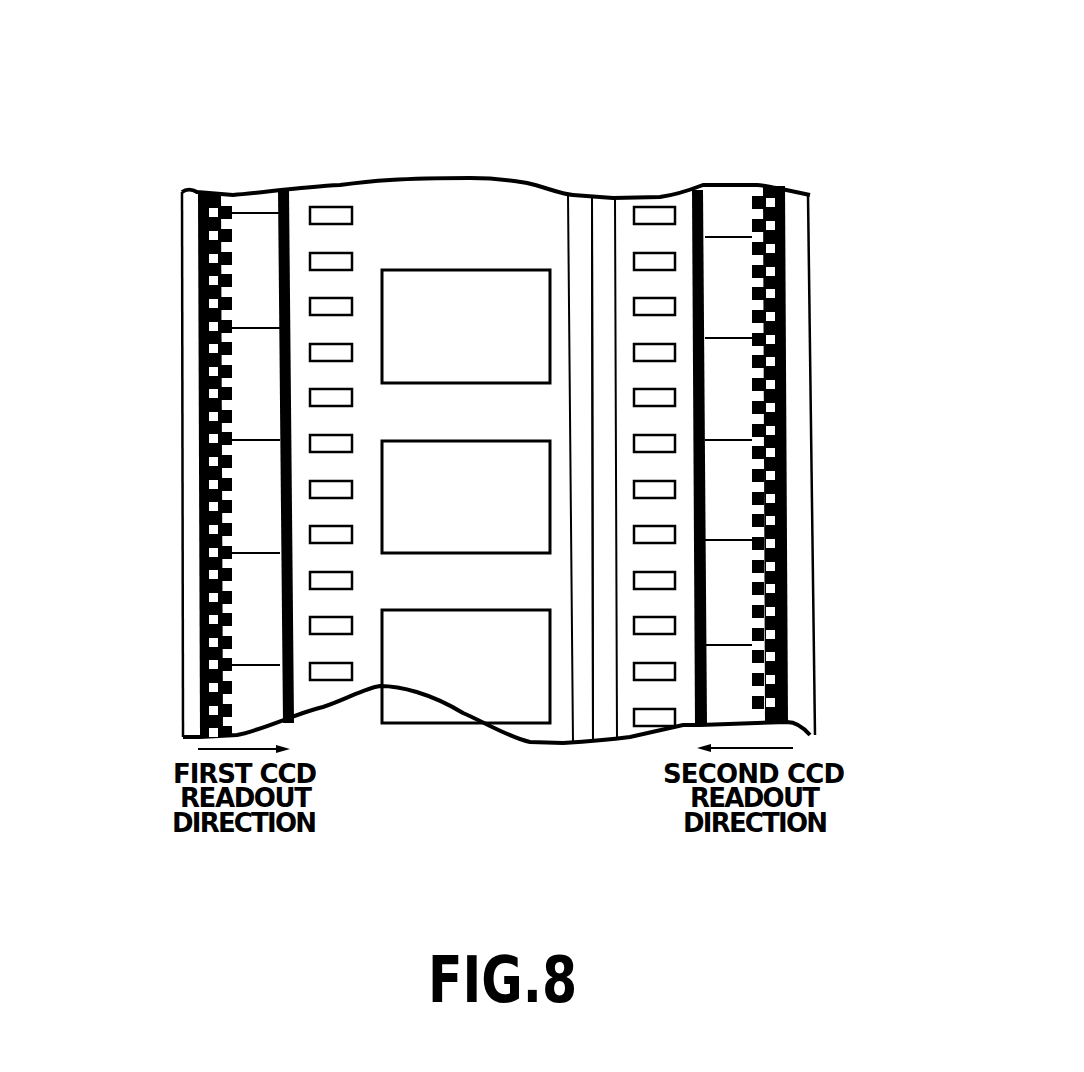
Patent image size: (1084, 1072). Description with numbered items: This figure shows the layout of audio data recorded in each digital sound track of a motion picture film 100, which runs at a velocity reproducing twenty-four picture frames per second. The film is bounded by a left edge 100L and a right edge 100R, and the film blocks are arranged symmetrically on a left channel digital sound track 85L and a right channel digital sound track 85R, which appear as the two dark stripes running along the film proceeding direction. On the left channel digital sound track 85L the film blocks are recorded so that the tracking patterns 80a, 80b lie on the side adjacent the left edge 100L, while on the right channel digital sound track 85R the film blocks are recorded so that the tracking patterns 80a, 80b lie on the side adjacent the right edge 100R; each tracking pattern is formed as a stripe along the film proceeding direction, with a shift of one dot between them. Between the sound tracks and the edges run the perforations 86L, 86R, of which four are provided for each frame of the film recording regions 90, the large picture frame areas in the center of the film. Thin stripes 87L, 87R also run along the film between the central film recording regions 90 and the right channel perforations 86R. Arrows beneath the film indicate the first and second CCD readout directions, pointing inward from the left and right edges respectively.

The motion picture film 100 is at (455, 113).
The left edge 100L is at (180, 462).
The right edge 100R is at (812, 425).
The tracking pattern 80a is at (212, 193).
The tracking pattern 80b is at (225, 198).
The left channel digital sound track 85L is at (252, 189).
The right channel digital sound track 85R is at (720, 187).
The perforations 86L is at (331, 207).
The perforations 86R is at (657, 207).
The left thin stripe 87L is at (582, 218).
The right thin stripe 87R is at (600, 217).
The film recording regions 90 is at (475, 312).